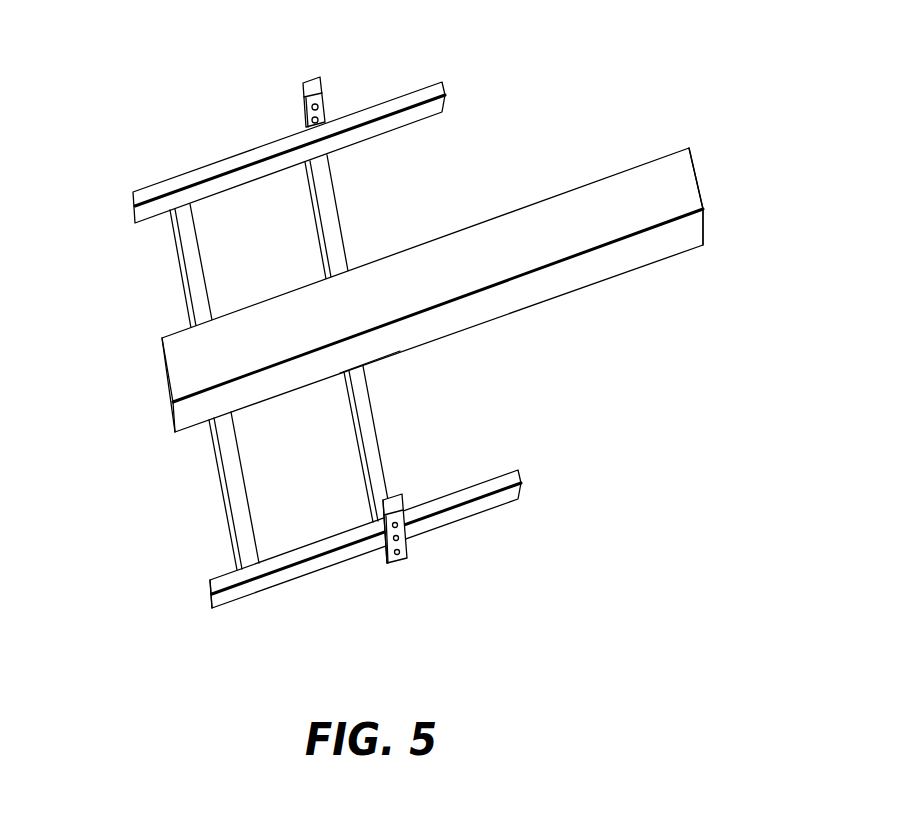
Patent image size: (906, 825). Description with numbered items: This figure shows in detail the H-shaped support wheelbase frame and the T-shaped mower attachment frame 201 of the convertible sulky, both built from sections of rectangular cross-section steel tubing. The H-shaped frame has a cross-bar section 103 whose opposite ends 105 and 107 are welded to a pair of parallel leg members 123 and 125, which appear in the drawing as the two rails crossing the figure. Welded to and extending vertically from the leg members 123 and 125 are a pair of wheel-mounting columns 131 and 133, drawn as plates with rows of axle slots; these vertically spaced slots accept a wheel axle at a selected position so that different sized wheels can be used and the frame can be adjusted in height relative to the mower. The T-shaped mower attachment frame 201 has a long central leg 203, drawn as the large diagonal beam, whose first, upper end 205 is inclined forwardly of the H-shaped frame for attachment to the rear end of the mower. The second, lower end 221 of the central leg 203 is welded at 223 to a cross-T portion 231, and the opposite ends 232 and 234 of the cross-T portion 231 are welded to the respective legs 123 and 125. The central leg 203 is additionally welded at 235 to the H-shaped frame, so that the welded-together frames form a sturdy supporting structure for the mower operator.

The cross-bar section of rectangular cross-section steel tubing 103 is at (372, 417).
The end of cross-bar section 105 is at (328, 156).
The end of cross-bar section 107 is at (383, 519).
The leg member 123 is at (133, 208).
The leg member 125 is at (325, 570).
The wheel-mounting column 131 is at (281, 70).
The wheel-mounting column 133 is at (393, 560).
The T-shaped mower attachment frame 201 is at (188, 494).
The central leg 203 is at (417, 293).
The first, upper end of central leg 205 is at (703, 245).
The second, lower end of central leg 221 is at (163, 378).
The weld 223 is at (170, 409).
The cross-T portion 231 is at (233, 554).
The end of cross-T portion 232 is at (165, 214).
The end of cross-T portion 234 is at (211, 596).
The weld 235 is at (368, 363).